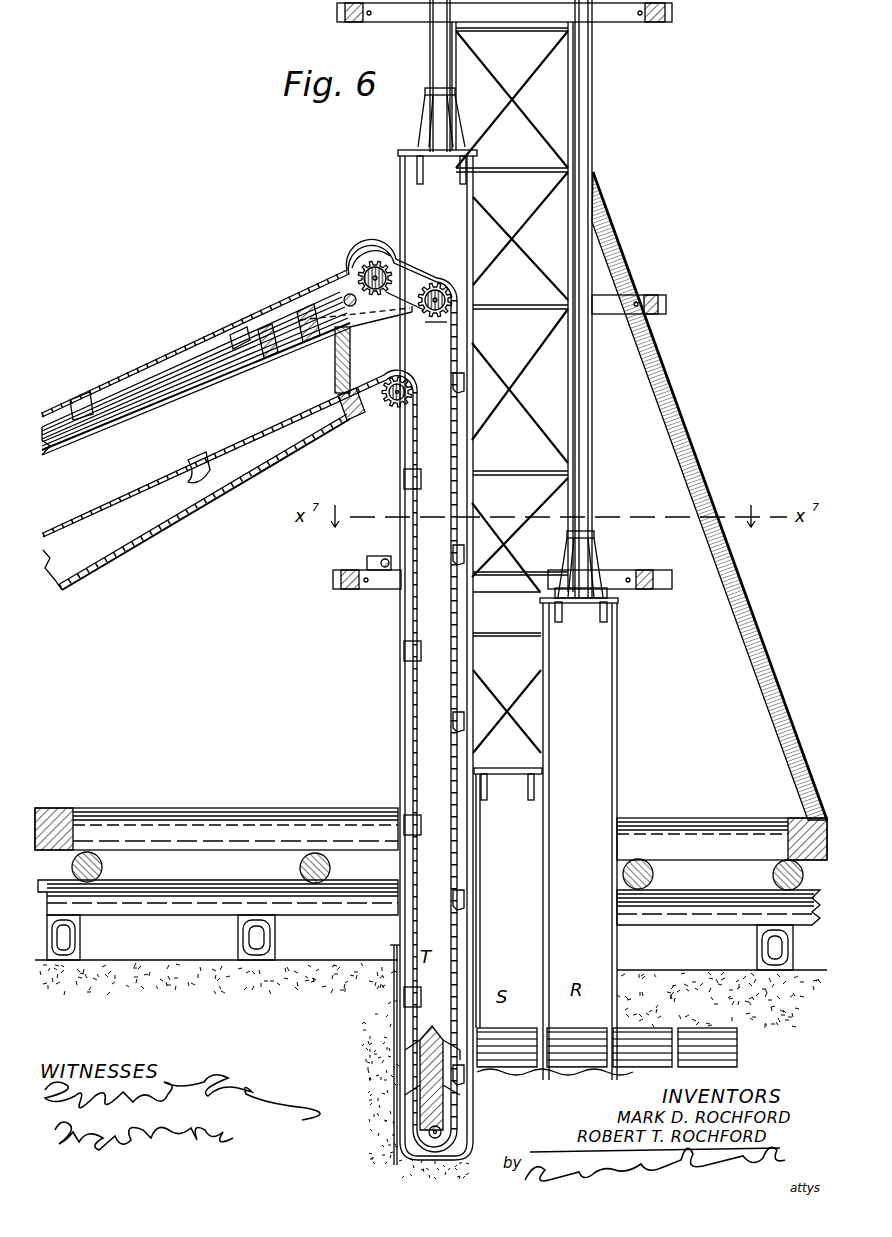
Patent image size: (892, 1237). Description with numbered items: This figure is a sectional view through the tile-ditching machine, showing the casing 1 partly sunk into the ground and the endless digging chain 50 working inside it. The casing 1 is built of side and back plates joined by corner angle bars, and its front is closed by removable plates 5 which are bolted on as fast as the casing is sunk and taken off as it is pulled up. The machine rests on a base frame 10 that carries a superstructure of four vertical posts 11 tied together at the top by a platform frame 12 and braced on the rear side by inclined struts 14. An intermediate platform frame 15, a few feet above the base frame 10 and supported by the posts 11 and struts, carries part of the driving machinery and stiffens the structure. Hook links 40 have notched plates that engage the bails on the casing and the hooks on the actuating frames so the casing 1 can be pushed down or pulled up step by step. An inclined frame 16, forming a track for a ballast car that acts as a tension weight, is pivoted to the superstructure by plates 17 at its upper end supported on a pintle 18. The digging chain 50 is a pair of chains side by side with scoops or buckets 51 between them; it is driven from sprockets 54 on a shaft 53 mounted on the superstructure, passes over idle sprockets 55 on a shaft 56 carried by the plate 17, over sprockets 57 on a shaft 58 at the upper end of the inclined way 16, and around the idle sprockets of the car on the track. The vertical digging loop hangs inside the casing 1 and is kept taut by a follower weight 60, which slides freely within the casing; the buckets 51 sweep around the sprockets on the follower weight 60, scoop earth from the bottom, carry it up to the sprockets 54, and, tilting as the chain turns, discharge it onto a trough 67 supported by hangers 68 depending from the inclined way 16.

The casing 1 is at (395, 188).
The plates 5 is at (393, 953).
The base frame 10 is at (280, 822).
The vertical posts 11 is at (437, 52).
The platform frame 12 is at (642, 26).
The inclined struts 14 is at (708, 489).
The intermediate platform frame 15 is at (652, 572).
The inclined frame 16 is at (165, 390).
The plates 17 is at (386, 306).
The pintle 18 is at (349, 293).
The hook links 40 is at (409, 124).
The endless digging chain 50 is at (213, 345).
The scoops or buckets 51 is at (87, 398).
The shaft 53 is at (399, 398).
The sprockets 54 is at (398, 404).
The idle sprockets 55 is at (436, 326).
The shaft 56 is at (436, 284).
The sprockets 57 is at (376, 254).
The shaft 58 is at (392, 257).
The follower weight 60 is at (400, 1054).
The trough 67 is at (187, 497).
The hangers 68 is at (334, 374).